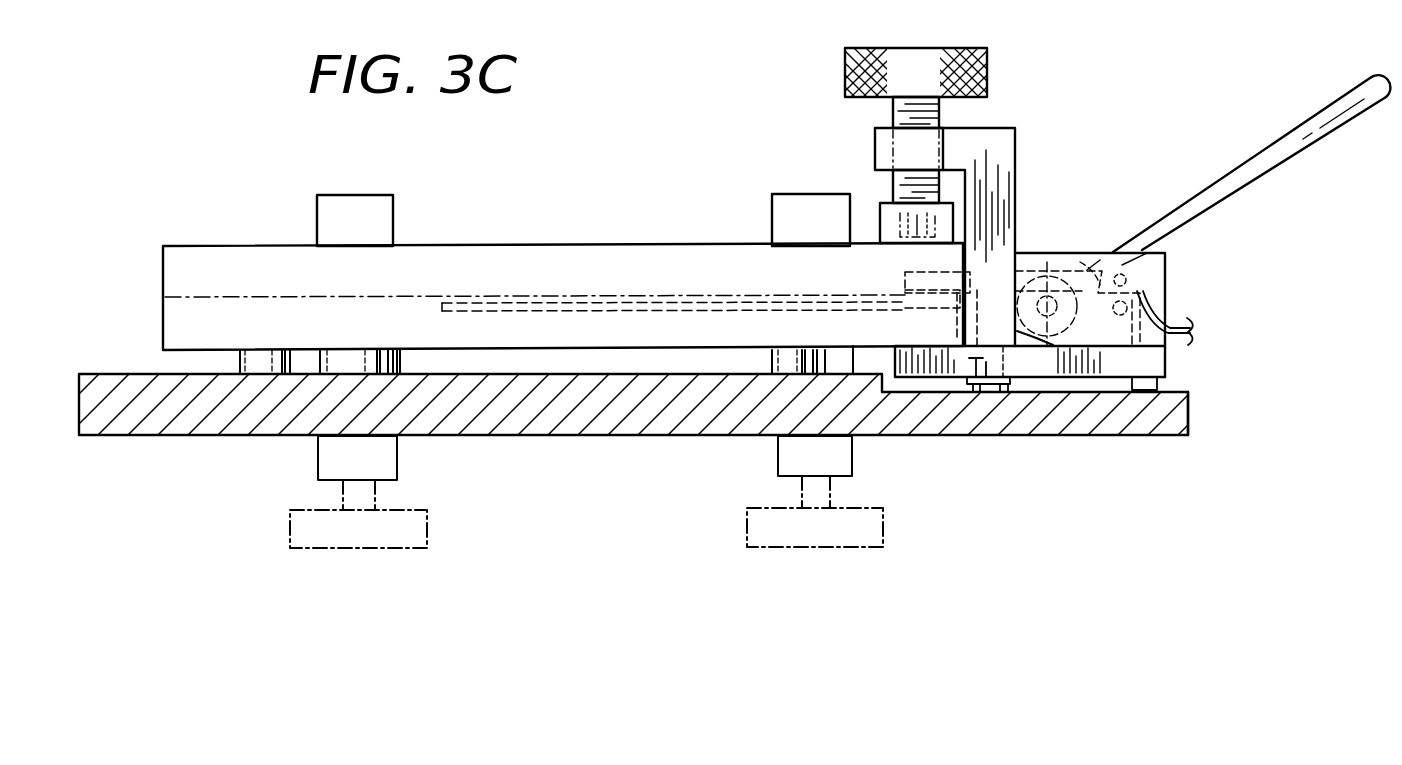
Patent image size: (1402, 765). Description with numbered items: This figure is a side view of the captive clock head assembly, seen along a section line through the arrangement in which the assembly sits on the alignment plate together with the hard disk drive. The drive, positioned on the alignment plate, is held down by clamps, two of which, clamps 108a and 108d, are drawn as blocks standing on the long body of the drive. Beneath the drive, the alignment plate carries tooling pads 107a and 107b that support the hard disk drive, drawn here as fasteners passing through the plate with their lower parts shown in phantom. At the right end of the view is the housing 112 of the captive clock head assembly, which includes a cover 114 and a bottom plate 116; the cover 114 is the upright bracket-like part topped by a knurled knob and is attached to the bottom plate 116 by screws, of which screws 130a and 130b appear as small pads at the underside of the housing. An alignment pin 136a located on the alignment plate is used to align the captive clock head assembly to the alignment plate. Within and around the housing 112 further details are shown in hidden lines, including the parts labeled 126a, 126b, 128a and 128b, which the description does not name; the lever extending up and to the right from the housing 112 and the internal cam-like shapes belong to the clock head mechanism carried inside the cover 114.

The tooling pad 107a is at (238, 360).
The tooling pad 107b is at (772, 360).
The clamp 108a is at (393, 215).
The clamp 108d is at (772, 214).
The housing 112 is at (1064, 218).
The cover 114 is at (995, 139).
The bottom plate 116 is at (1118, 415).
The pin 126a is at (975, 362).
The pin 126b is at (1182, 410).
The lever arm 128a is at (1017, 331).
The spring pawl 128b is at (1168, 337).
The screw 130a is at (1012, 384).
The screw 130b is at (1157, 378).
The alignment pin 136a is at (992, 392).